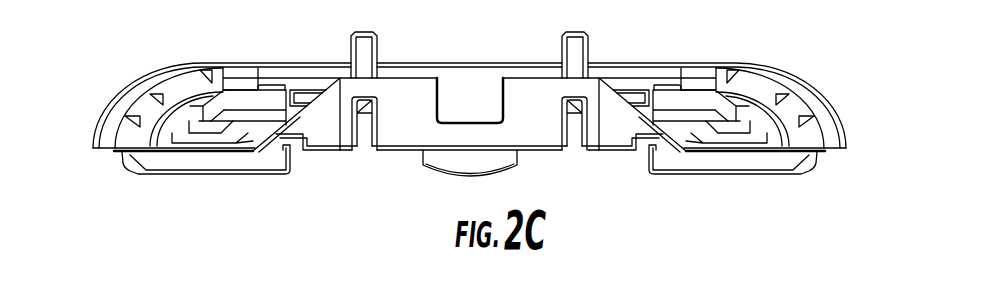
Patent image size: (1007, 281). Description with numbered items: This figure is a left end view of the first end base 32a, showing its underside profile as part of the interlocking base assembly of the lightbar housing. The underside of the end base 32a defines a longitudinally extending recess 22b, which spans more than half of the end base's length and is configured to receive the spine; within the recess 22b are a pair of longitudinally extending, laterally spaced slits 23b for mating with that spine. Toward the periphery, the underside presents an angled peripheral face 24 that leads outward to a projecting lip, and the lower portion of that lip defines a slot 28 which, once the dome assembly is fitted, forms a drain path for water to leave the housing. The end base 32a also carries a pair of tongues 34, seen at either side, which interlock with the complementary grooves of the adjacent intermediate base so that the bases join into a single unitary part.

The first end base 32a is at (862, 96).
The angled peripheral face 24 is at (113, 160).
The slot 28 is at (838, 153).
The tongues 34 is at (215, 163).
The recess 22b is at (323, 152).
The slits 23b is at (363, 145).